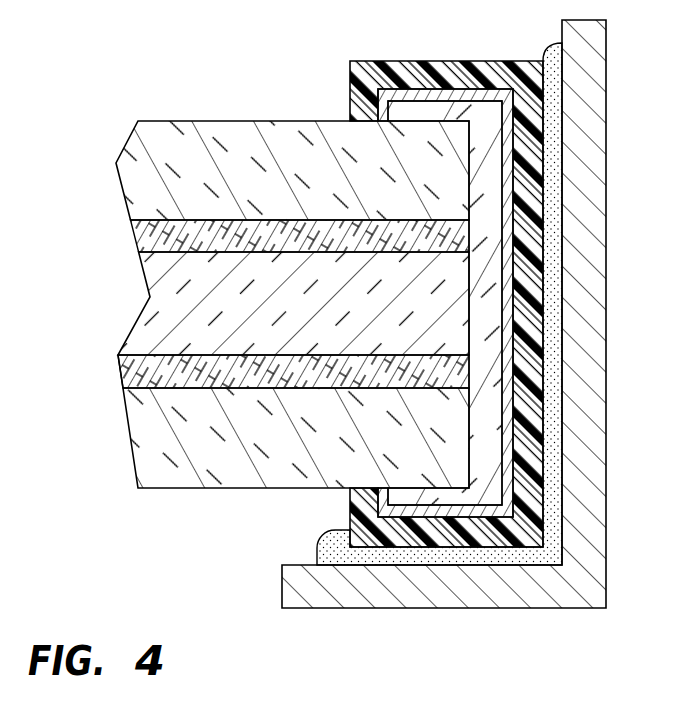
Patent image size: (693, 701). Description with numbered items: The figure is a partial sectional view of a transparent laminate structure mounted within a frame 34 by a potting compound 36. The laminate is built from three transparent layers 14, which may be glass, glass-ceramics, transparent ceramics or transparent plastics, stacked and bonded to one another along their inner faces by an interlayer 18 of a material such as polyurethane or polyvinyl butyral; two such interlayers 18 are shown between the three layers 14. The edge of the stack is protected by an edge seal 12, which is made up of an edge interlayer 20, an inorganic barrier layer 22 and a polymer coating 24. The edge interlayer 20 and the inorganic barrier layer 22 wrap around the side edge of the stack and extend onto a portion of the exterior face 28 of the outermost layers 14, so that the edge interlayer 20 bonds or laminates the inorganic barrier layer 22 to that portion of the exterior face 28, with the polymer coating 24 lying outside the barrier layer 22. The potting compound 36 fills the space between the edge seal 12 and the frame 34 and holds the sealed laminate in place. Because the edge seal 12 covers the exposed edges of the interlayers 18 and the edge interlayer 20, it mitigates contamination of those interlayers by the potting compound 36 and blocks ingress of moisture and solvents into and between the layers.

The edge seal 12 is at (360, 357).
The transparent layers 14 is at (302, 188).
The interlayer 18 is at (148, 240).
The edge interlayer 20 is at (487, 252).
The inorganic barrier layer 22 is at (507, 307).
The polymer coating 24 is at (533, 368).
The exterior face 28 is at (407, 121).
The frame 34 is at (577, 584).
The potting compound 36 is at (552, 475).